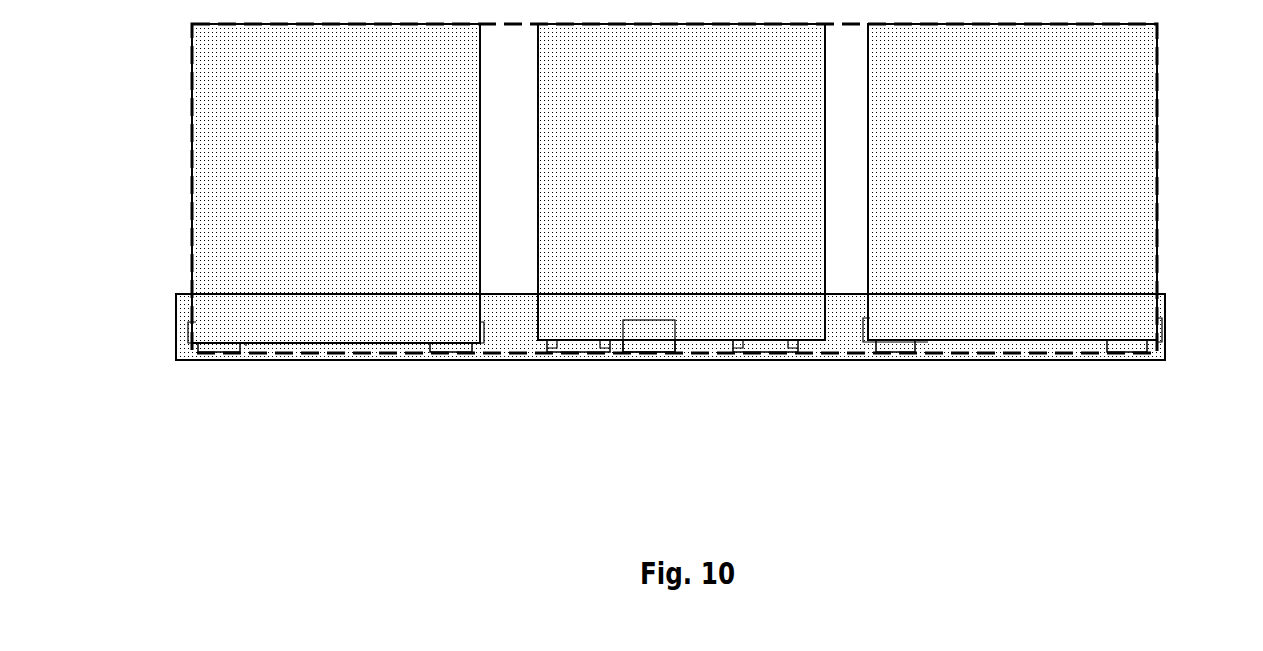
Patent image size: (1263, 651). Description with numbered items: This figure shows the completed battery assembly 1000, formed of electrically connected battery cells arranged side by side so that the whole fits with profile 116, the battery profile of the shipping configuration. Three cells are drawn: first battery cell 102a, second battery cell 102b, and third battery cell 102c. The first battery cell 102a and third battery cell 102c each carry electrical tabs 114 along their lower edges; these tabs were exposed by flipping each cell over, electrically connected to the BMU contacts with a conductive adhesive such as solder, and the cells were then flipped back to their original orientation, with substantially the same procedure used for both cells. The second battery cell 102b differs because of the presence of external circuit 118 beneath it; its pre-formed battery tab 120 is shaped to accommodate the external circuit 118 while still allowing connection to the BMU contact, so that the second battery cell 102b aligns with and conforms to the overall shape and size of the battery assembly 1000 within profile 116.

The first battery cell 102a is at (336, 183).
The second battery cell 102b is at (681, 182).
The third battery cell 102c is at (1012, 183).
The electrical tabs 114 is at (236, 366).
The profile 116 is at (1168, 122).
The external circuit 118 is at (665, 360).
The pre-formed battery tab 120 is at (590, 361).
The battery assembly 1000 is at (955, 535).